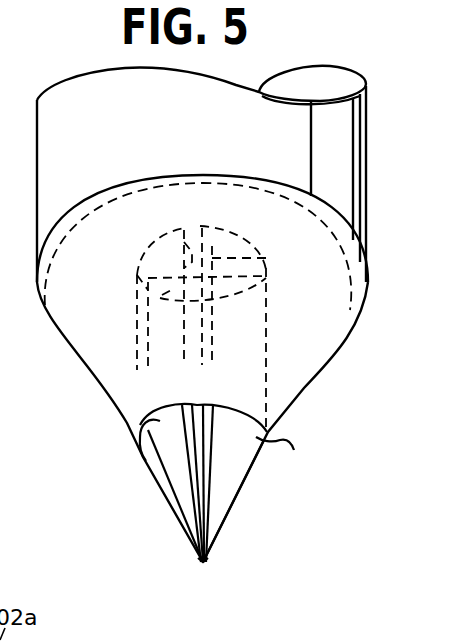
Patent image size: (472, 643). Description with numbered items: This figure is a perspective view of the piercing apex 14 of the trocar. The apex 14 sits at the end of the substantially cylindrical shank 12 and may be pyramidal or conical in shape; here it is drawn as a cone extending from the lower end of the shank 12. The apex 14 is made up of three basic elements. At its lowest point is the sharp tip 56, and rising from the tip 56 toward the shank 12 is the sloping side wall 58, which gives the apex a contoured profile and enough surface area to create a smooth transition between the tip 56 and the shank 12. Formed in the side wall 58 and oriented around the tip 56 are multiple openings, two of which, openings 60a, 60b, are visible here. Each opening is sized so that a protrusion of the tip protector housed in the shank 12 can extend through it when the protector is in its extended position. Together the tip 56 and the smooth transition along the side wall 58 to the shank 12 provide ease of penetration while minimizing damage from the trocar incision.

The shank 12 is at (354, 182).
The piercing apex 14 is at (304, 388).
The sharp tip 56 is at (203, 562).
The sloping side wall 58 is at (112, 353).
The opening 60a is at (135, 427).
The opening 60b is at (294, 450).